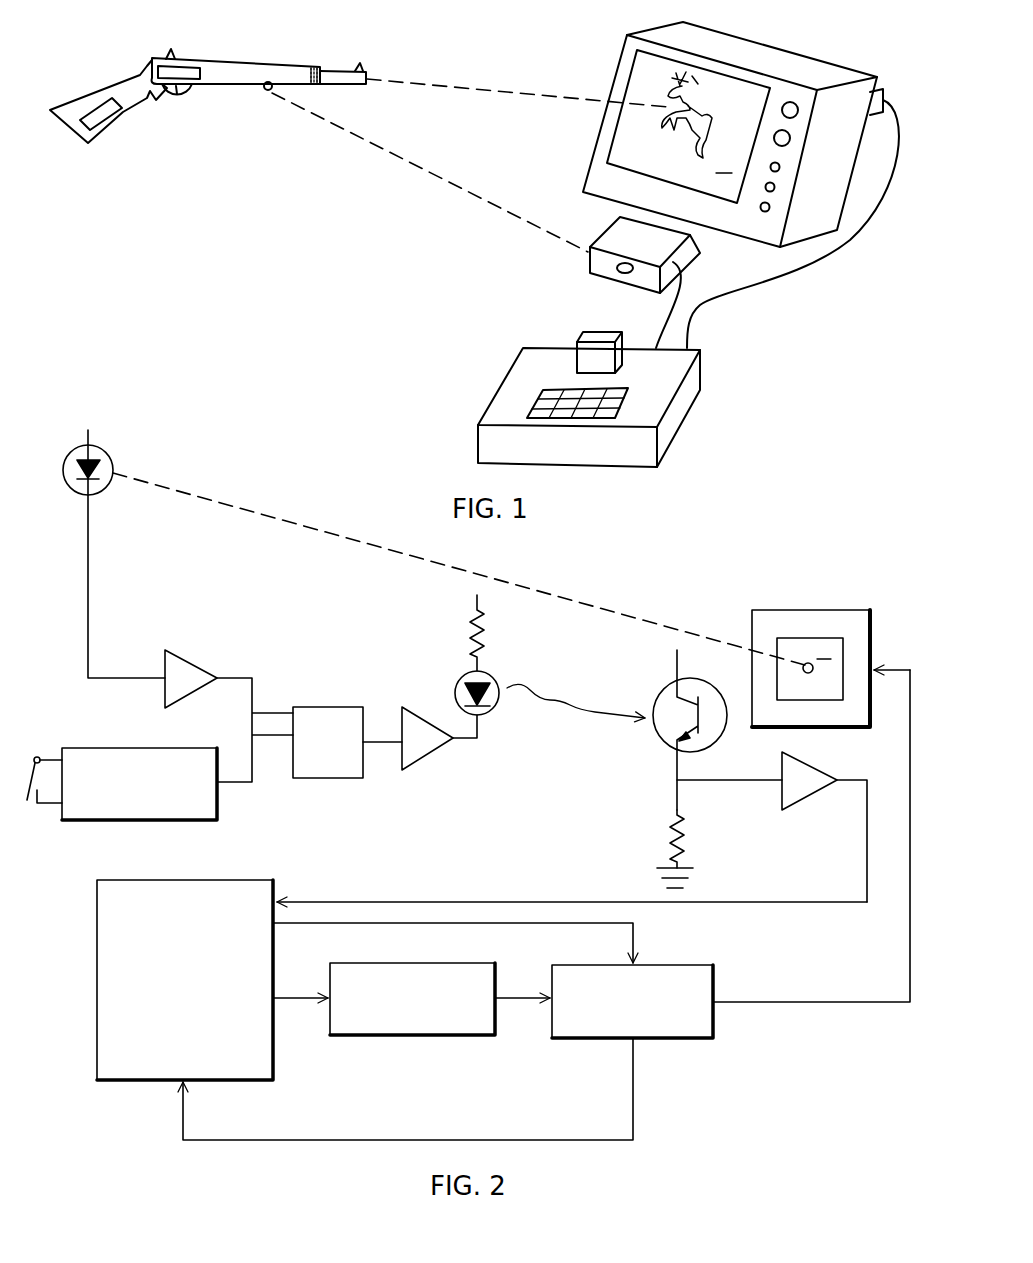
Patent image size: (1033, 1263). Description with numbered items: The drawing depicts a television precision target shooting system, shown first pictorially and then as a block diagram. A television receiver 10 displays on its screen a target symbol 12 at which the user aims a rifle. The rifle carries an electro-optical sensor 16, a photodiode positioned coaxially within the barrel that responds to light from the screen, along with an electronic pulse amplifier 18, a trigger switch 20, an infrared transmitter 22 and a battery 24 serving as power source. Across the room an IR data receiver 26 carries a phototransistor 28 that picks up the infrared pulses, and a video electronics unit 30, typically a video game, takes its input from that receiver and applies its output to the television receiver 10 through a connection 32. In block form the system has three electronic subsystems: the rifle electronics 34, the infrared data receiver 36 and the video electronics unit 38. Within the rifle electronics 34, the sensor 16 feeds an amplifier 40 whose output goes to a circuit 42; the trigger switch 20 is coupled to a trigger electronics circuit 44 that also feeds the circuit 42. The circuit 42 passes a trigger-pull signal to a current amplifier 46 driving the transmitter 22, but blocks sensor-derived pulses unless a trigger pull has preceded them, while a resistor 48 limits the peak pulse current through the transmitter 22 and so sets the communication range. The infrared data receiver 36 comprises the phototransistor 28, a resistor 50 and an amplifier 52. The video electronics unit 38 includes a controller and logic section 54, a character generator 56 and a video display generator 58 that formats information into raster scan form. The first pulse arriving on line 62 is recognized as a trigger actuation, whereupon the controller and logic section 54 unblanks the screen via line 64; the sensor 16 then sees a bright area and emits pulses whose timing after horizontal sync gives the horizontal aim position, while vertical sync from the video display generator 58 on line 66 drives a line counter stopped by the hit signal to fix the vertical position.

In FIG. 1, the television receiver 10 is at (717, 28).
In FIG. 2, the television receiver 10 is at (813, 610).
In FIG. 1, the target symbol 12 is at (690, 108).
In FIG. 2, the target symbol 12 is at (813, 674).
In FIG. 1, the electro-optical sensor 16 is at (315, 68).
In FIG. 2, the electro-optical sensor 16 is at (112, 462).
In FIG. 1, the electronic pulse amplifier 18 is at (185, 70).
In FIG. 1, the trigger switch 20 is at (181, 95).
In FIG. 2, the trigger switch 20 is at (28, 806).
In FIG. 1, the infrared transmitter 22 is at (270, 91).
In FIG. 2, the infrared transmitter 22 is at (497, 708).
In FIG. 1, the battery 24 is at (117, 120).
In FIG. 1, the IR data receiver 26 is at (695, 260).
In FIG. 1, the phototransistor 28 is at (623, 277).
In FIG. 2, the phototransistor 28 is at (727, 730).
In FIG. 1, the video electronics unit 30 is at (690, 413).
In FIG. 1, the connection 32 is at (880, 90).
In FIG. 2, the rifle electronics 34 is at (263, 757).
In FIG. 2, the infrared data receiver 36 is at (719, 810).
In FIG. 2, the video electronics unit 38 is at (366, 897).
In FIG. 2, the amplifier 40 is at (187, 660).
In FIG. 2, the circuit 42 is at (312, 706).
In FIG. 2, the trigger electronics circuit 44 is at (163, 821).
In FIG. 2, the current amplifier 46 is at (433, 755).
In FIG. 2, the resistor 48 is at (488, 625).
In FIG. 2, the resistor 50 is at (672, 815).
In FIG. 2, the amplifier 52 is at (823, 773).
In FIG. 2, the controller and logic section 54 is at (97, 967).
In FIG. 2, the character generator 56 is at (390, 1037).
In FIG. 2, the video display generator 58 is at (605, 1040).
In FIG. 2, the line 62 is at (870, 866).
In FIG. 2, the line 64 is at (607, 923).
In FIG. 2, the line 66 is at (430, 1140).